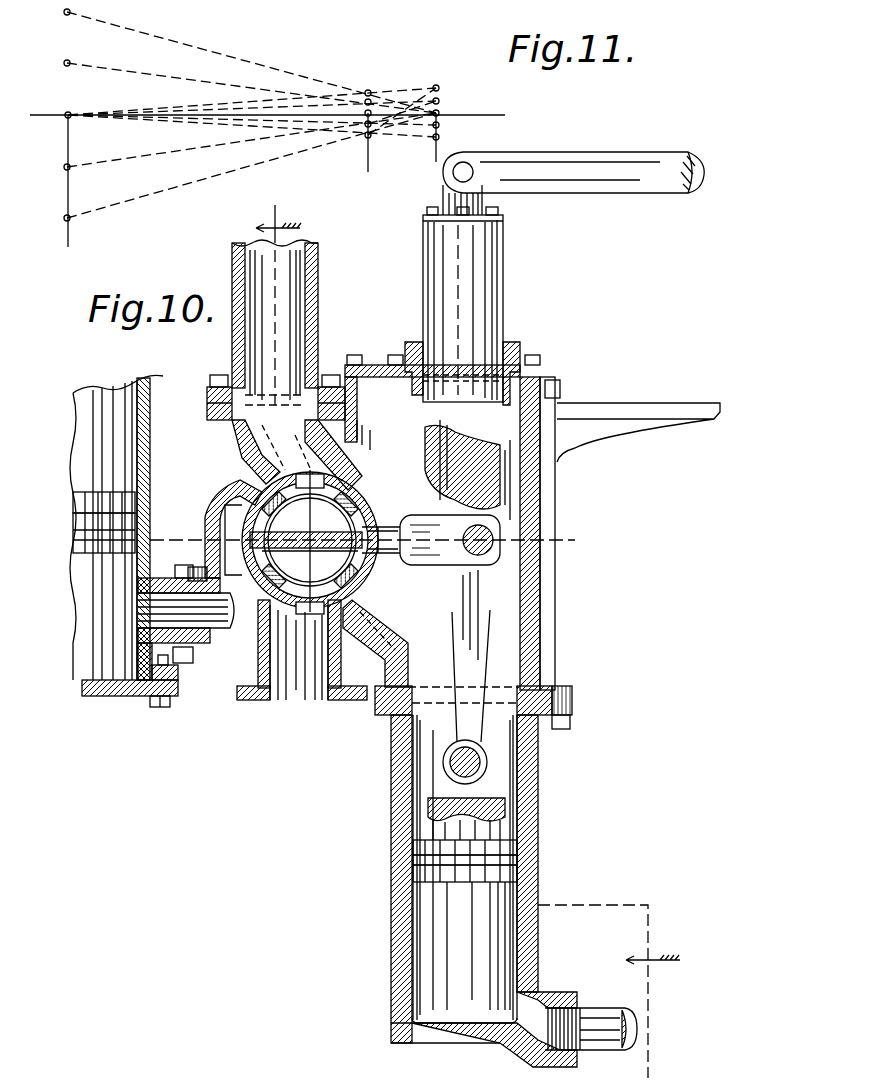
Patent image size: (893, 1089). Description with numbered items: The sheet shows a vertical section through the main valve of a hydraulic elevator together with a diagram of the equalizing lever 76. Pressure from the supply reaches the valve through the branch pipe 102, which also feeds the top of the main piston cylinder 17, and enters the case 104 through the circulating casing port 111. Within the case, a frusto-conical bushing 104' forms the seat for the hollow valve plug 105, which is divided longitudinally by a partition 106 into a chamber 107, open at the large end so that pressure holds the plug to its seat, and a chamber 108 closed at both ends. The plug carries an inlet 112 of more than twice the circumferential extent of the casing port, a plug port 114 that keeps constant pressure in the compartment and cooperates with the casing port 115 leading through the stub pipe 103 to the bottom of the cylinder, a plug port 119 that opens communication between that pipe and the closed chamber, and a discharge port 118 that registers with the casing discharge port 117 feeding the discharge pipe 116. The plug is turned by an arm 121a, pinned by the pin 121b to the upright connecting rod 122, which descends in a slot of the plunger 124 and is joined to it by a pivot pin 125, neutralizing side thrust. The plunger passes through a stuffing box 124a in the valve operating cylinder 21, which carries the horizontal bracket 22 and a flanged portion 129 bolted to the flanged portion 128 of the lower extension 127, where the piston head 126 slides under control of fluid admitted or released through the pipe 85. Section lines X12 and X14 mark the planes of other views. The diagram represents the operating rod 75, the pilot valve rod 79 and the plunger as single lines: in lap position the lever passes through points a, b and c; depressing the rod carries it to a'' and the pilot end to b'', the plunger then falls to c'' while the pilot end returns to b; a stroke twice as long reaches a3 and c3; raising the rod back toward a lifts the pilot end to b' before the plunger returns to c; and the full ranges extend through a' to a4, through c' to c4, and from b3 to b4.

In FIG. 11, the point c4 is at (64, 17).
In FIG. 11, the point c' is at (46, 74).
In FIG. 11, the point c is at (51, 127).
In FIG. 11, the point c'' is at (46, 181).
In FIG. 11, the point c3 is at (63, 221).
In FIG. 11, the point a4 is at (369, 90).
In FIG. 11, the point a' is at (394, 67).
In FIG. 11, the point a is at (400, 86).
In FIG. 11, the point a'' is at (392, 139).
In FIG. 11, the point a3 is at (366, 138).
In FIG. 11, the point b4 is at (438, 86).
In FIG. 11, the point b' is at (458, 90).
In FIG. 11, the point b is at (466, 101).
In FIG. 11, the point b'' is at (462, 128).
In FIG. 11, the point b3 is at (439, 138).
In FIG. 11, the operating rod 75 is at (368, 172).
In FIG. 11, the pilot valve rod 79 is at (436, 158).
In FIG. 11, the equalizing lever 76 is at (368, 115).
In FIG. 10, the equalizing lever 76 is at (606, 194).
In FIG. 11, the plunger 124 is at (70, 243).
In FIG. 10, the plunger 124 is at (503, 296).
In FIG. 10, the stuffing box 124a is at (521, 346).
In FIG. 10, the branch pipe 102 is at (232, 276).
In FIG. 10, the case 104 is at (279, 528).
In FIG. 10, the frusto-conical bushing 104' is at (268, 529).
In FIG. 10, the chamber 107 is at (310, 540).
In FIG. 10, the partition 106 is at (306, 551).
In FIG. 10, the chamber 108 is at (332, 541).
In FIG. 10, the casing port 111 is at (347, 472).
In FIG. 10, the plug port 114 is at (352, 480).
In FIG. 10, the inlet 112 is at (350, 502).
In FIG. 10, the casing port 115 is at (245, 528).
In FIG. 10, the discharge port 118 is at (356, 578).
In FIG. 10, the plug port 119 is at (252, 640).
In FIG. 10, the stub pipe 103 is at (160, 672).
In FIG. 10, the main piston cylinder 17 is at (120, 690).
In FIG. 10, the discharge pipe 116 is at (266, 703).
In FIG. 10, the discharge port 117 is at (312, 612).
In FIG. 10, the valve plug 105 is at (312, 650).
In FIG. 10, the arm 121a is at (492, 520).
In FIG. 10, the pin 121b is at (490, 552).
In FIG. 10, the connecting rod 122 is at (540, 601).
In FIG. 10, the horizontal bracket 22 is at (660, 421).
In FIG. 10, the valve operating cylinder 21 is at (545, 663).
In FIG. 10, the flanged portion 129 is at (565, 690).
In FIG. 10, the flanged portion 128 is at (572, 706).
In FIG. 10, the lower extension 127 is at (540, 742).
In FIG. 10, the pivot pin 125 is at (480, 766).
In FIG. 10, the piston head 126 is at (517, 858).
In FIG. 10, the supply and discharge pipe 85 is at (606, 1005).
In FIG. 10, the section line x12 X12 is at (477, 630).
In FIG. 10, the section line x14 X14 is at (385, 539).